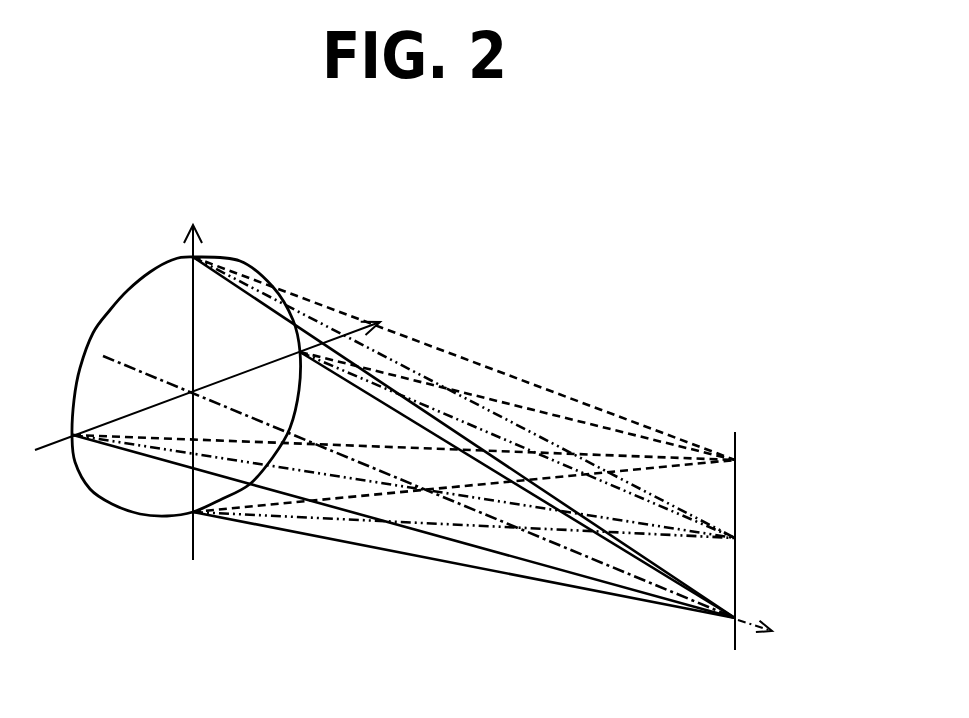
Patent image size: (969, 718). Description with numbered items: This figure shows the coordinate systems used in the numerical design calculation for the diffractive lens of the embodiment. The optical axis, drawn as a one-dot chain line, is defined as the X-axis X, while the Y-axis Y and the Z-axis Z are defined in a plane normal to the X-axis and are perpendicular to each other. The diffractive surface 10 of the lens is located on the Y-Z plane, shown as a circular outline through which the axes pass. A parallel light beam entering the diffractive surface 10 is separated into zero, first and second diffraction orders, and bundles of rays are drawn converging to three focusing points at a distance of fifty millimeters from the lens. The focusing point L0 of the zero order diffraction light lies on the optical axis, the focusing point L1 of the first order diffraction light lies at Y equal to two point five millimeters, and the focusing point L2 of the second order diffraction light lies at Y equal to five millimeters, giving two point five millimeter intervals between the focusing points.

The diffractive surface 10 is at (123, 485).
The focusing point of the zero order diffraction light L0 is at (735, 618).
The focusing point of the first order diffraction light L1 is at (735, 538).
The focusing point of the second order diffraction light L2 is at (735, 458).
The X-axis X is at (773, 541).
The Y-axis Y is at (183, 392).
The Z-axis Z is at (224, 374).